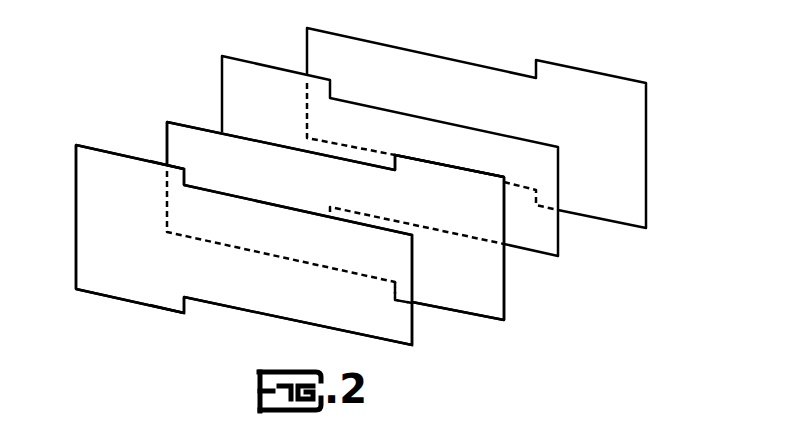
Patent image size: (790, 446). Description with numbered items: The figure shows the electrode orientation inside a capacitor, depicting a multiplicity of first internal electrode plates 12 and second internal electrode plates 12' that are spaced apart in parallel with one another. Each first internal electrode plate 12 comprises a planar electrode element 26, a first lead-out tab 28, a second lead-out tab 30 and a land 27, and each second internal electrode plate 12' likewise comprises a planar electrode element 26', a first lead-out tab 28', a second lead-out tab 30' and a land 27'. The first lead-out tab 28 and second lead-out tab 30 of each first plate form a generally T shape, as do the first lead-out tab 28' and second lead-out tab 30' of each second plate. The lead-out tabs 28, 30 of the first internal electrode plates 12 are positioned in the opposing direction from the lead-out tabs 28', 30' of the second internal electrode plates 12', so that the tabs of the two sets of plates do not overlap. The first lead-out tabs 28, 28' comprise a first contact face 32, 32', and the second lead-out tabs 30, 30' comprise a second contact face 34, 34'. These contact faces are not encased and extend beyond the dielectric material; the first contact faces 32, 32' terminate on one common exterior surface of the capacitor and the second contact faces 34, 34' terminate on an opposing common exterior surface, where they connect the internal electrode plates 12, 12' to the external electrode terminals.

The first internal electrode plate 12 is at (228, 245).
The planar electrode element 26 is at (298, 265).
The land 27 is at (60, 217).
The first lead-out tab 28 is at (130, 307).
The second lead-out tab 30 is at (130, 140).
The first contact face 32 is at (157, 319).
The second contact face 34 is at (158, 153).
The second internal electrode plate 12' is at (359, 221).
The planar electrode element 26' is at (281, 127).
The land 27' is at (527, 259).
The first lead-out tab 28' is at (458, 330).
The second lead-out tab 30' is at (496, 204).
The first contact face 32' is at (427, 316).
The second contact face 34' is at (461, 105).